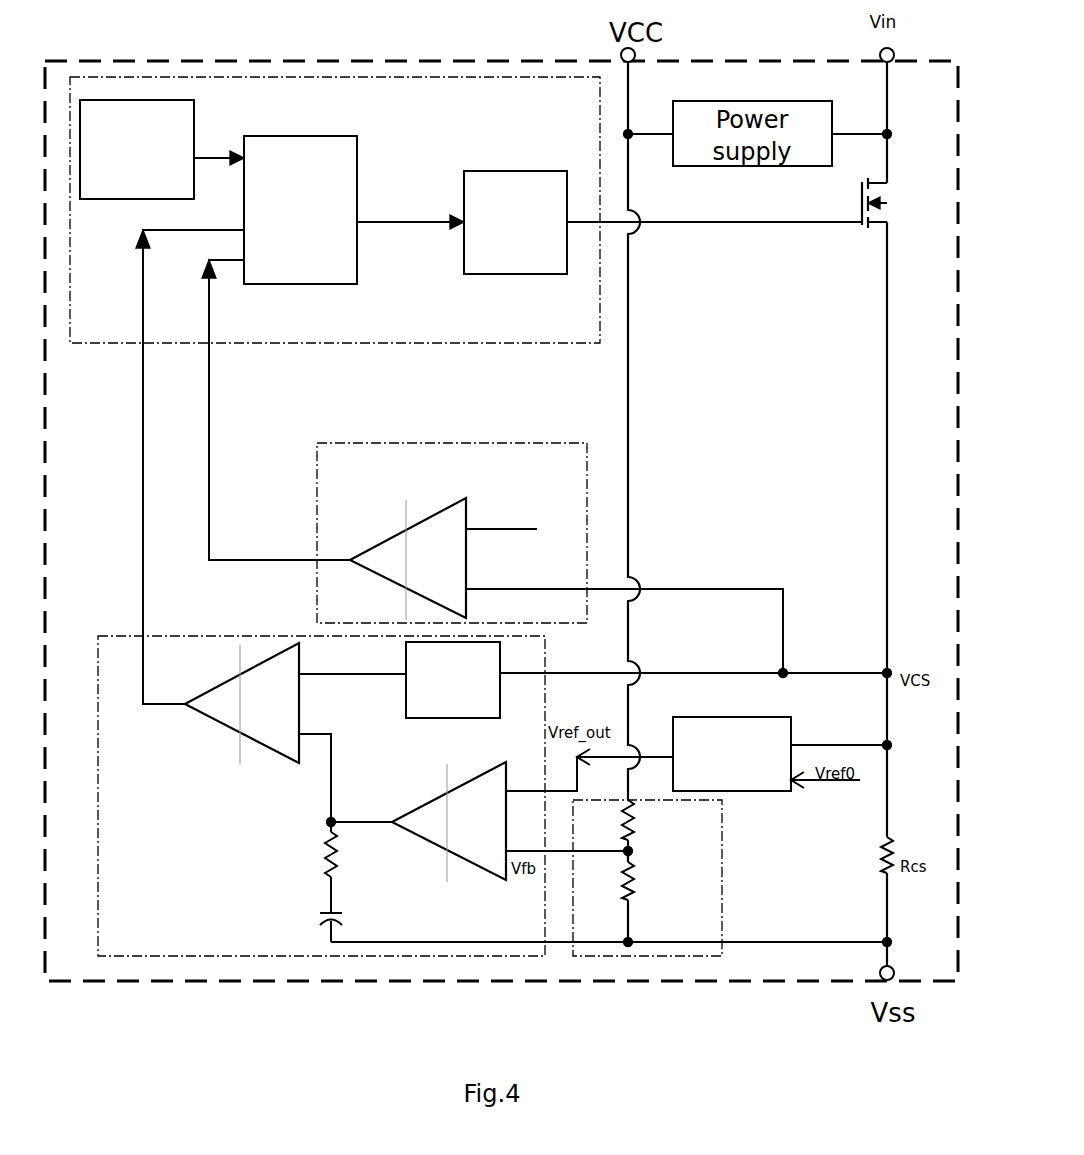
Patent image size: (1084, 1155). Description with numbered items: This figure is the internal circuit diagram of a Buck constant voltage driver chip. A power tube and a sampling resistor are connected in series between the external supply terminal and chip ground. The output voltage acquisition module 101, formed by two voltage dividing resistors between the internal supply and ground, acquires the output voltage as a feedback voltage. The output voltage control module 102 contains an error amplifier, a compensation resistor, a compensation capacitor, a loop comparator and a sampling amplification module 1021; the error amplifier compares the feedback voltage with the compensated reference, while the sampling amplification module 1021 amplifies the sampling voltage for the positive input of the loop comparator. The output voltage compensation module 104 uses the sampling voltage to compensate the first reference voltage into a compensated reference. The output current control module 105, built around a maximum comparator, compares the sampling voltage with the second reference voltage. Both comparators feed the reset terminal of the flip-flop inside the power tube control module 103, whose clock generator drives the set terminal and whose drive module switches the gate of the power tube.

The output voltage acquisition module 101 is at (724, 876).
The output voltage control module 102 is at (321, 765).
The power tube control module 103 is at (265, 345).
The output voltage compensation module 104 is at (732, 754).
The output current control module 105 is at (452, 442).
The sampling amplification module 1021 is at (453, 680).